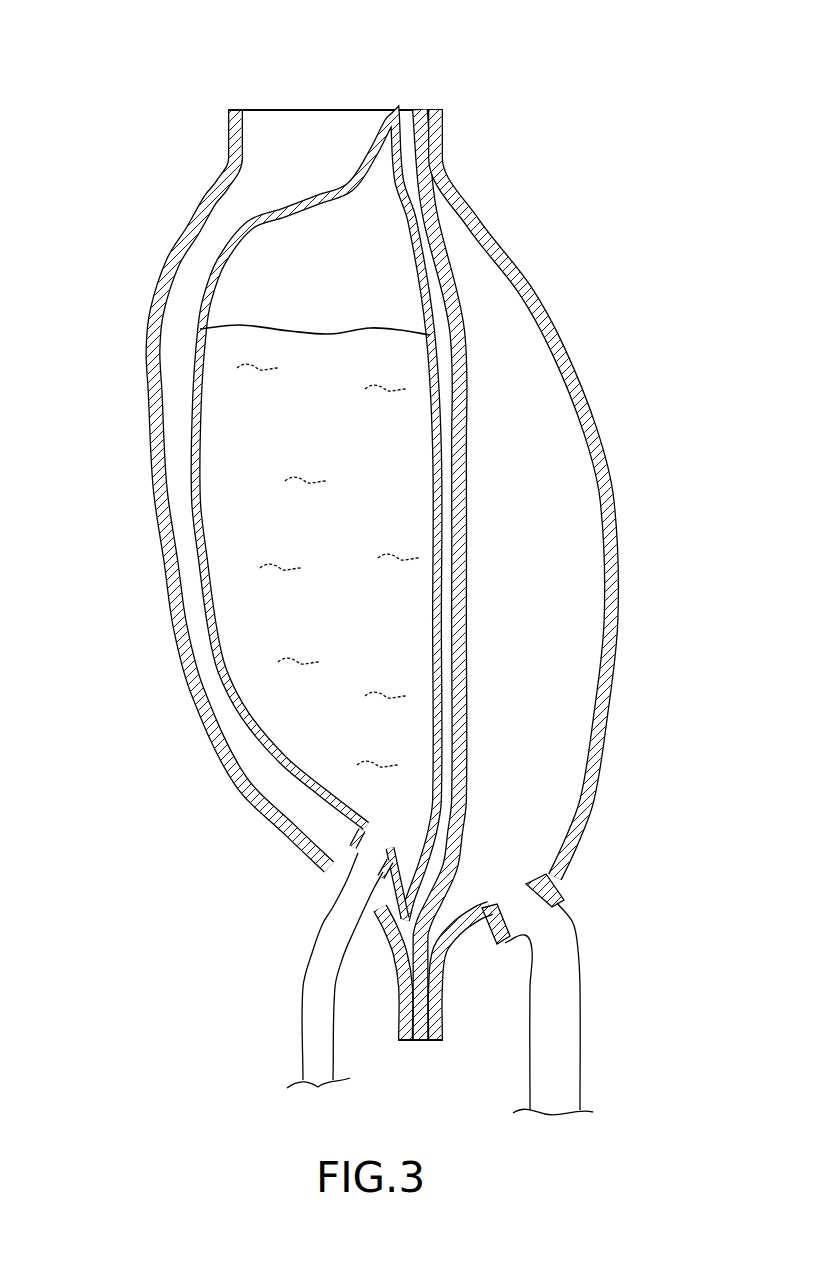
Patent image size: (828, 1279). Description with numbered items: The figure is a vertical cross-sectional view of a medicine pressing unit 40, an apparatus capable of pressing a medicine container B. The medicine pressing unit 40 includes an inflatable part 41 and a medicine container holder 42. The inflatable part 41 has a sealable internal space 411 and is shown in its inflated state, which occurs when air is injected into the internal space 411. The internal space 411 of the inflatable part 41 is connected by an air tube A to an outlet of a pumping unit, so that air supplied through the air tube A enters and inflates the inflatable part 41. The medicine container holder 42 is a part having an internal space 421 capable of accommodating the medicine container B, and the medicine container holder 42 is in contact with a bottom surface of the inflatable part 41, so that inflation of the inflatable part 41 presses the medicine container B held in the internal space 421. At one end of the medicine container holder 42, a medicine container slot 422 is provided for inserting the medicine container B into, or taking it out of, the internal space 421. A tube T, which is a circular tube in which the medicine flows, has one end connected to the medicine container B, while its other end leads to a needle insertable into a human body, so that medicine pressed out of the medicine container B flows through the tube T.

The medicine pressing unit 40 is at (173, 133).
The inflatable part 41 is at (567, 337).
The internal space 411 is at (543, 537).
The medicine container holder 42 is at (150, 313).
The internal space 421 is at (271, 760).
The medicine container slot 422 is at (358, 110).
The medicine container B is at (333, 190).
The tube T is at (300, 1013).
The air tube A is at (580, 995).